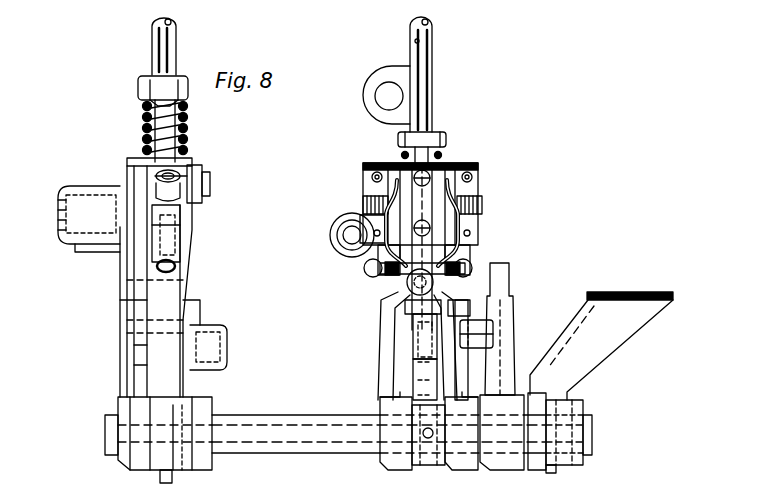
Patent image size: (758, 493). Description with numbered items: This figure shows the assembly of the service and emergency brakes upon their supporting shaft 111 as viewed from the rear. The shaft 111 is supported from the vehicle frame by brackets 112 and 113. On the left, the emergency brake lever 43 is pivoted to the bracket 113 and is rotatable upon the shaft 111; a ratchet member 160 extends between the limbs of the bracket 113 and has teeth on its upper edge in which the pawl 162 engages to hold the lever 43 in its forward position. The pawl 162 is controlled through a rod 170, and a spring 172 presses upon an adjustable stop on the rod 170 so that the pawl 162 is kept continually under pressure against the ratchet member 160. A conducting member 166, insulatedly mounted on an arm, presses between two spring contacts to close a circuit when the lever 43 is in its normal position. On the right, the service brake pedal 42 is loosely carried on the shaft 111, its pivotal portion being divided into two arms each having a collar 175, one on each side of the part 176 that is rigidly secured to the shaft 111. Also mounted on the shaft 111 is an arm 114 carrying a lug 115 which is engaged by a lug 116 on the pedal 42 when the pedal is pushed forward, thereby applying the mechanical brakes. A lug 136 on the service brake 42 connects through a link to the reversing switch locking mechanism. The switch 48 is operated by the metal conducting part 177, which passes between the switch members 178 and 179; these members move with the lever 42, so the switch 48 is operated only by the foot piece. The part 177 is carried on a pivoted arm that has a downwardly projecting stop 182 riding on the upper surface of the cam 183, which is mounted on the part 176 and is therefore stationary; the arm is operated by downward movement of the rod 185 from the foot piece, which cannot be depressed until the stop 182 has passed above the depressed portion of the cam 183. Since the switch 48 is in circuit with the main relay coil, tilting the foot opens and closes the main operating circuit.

The rod 170 is at (165, 52).
The emergency brake lever 43 is at (157, 30).
The spring 172 is at (186, 128).
The conducting member 166 is at (209, 180).
The pawl 162 is at (165, 240).
The ratchet member 160 is at (160, 305).
The bracket 113 is at (76, 236).
The service brake pedal 42 is at (428, 40).
The rod 185 is at (422, 85).
The lug 136 is at (366, 108).
The switch member 179 is at (470, 190).
The switch member 178 is at (368, 198).
The metal conducting part 177 is at (406, 286).
The switch 48 is at (466, 265).
The lug 115 is at (490, 321).
The arm 114 is at (506, 342).
The lug 116 is at (459, 343).
The stop 182 is at (416, 343).
The cam 183 is at (424, 360).
The supporting shaft 111 is at (336, 447).
The collar 175 is at (388, 461).
The part 176 is at (429, 462).
The bracket 112 is at (588, 355).